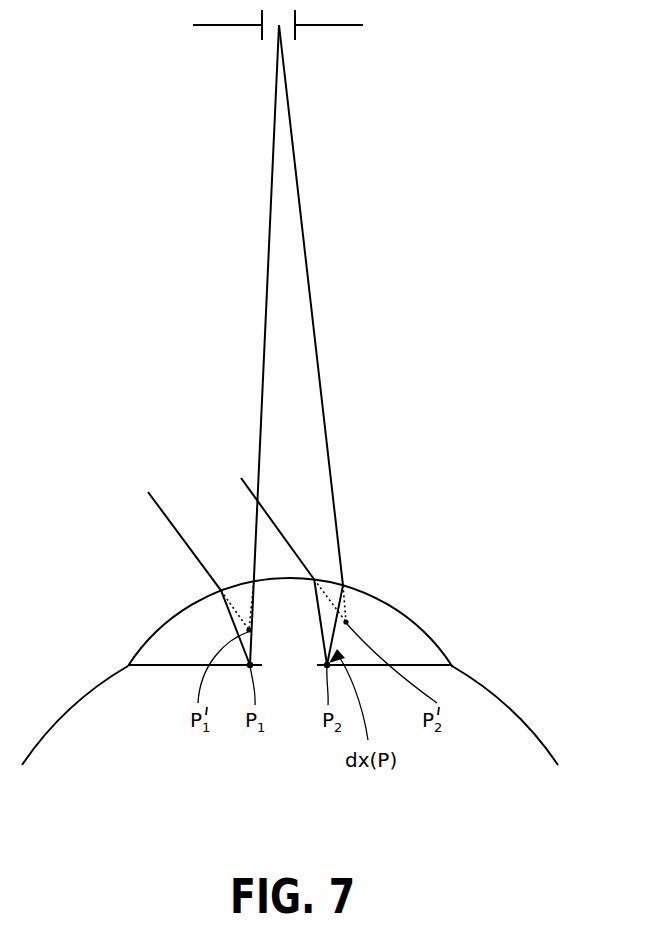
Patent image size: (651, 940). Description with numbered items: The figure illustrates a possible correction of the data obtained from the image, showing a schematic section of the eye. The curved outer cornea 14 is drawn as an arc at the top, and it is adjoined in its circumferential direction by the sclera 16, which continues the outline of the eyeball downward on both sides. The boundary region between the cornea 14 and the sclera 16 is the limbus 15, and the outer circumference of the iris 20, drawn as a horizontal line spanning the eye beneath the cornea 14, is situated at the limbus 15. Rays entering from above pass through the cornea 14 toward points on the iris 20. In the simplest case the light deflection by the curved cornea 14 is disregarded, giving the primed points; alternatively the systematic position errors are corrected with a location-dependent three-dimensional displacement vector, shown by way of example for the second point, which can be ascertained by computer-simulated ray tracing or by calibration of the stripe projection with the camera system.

The cornea 14 is at (402, 612).
The iris 20 is at (407, 665).
The limbus 15 is at (452, 665).
The sclera 16 is at (490, 690).